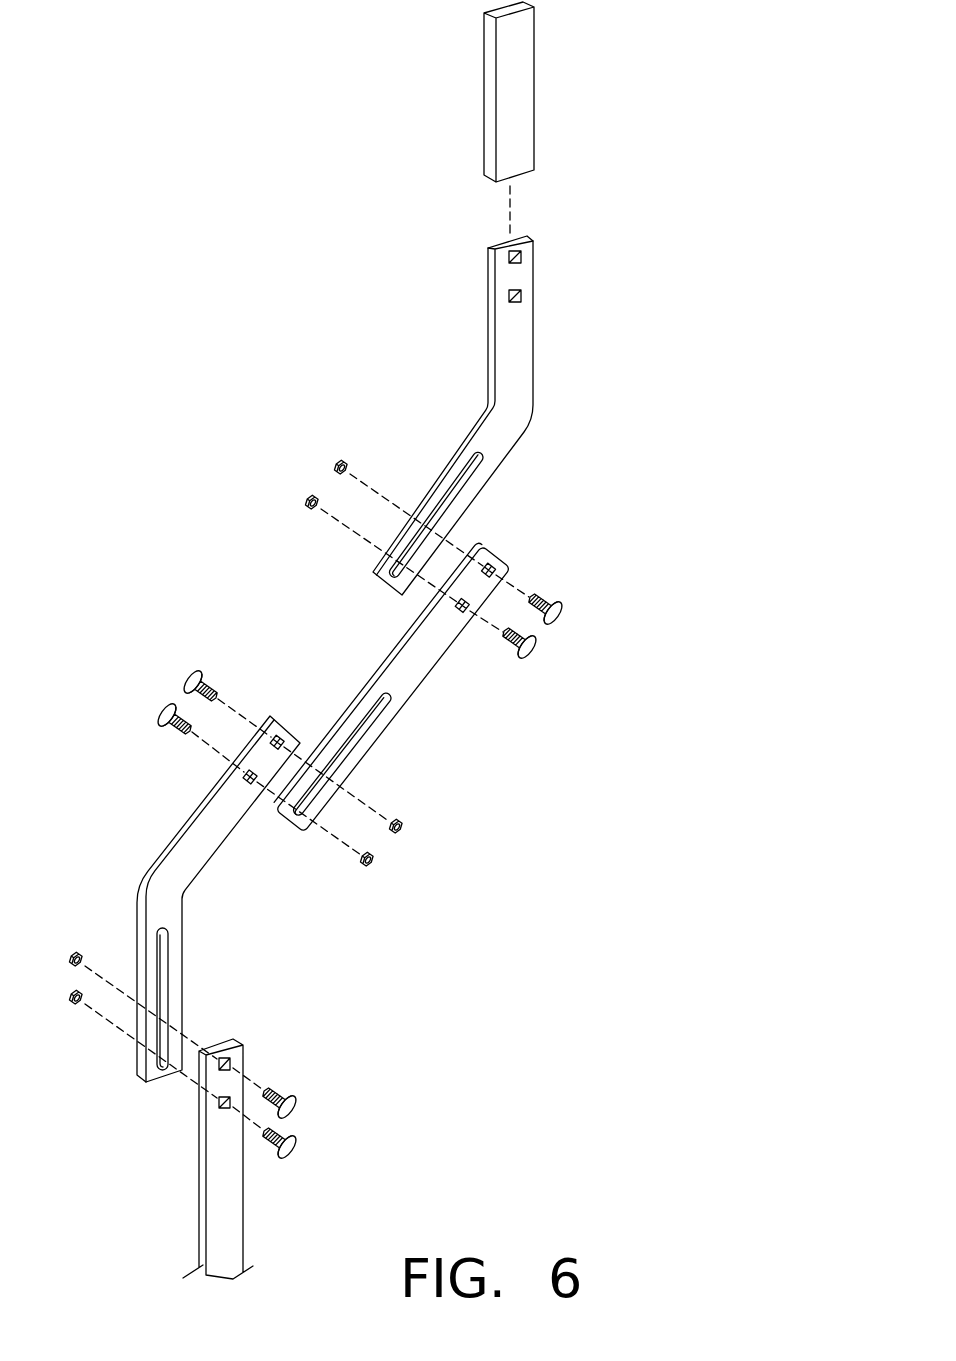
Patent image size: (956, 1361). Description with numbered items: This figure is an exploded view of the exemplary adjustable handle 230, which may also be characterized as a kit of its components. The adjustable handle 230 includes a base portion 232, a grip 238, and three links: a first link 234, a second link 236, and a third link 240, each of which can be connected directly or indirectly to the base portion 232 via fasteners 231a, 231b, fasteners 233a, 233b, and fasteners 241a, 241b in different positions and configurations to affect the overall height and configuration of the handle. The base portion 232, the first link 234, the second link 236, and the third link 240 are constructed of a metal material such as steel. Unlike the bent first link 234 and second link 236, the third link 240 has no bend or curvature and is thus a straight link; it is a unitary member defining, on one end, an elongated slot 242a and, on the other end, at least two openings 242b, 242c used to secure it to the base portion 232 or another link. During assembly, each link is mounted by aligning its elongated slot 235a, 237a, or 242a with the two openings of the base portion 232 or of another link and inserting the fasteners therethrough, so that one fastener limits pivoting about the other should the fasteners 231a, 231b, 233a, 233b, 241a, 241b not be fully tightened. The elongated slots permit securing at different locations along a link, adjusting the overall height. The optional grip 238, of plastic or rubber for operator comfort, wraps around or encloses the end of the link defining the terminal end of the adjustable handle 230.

The adjustable handle 230 is at (165, 344).
The fastener 231a is at (293, 1110).
The fastener 231b is at (293, 1150).
The base portion 232 is at (243, 1237).
The fastener 233a is at (185, 674).
The fastener 233b is at (160, 708).
The first link 234 is at (143, 883).
The elongated slot 235a is at (163, 977).
The second link 236 is at (535, 360).
The elongated slot 237a is at (478, 474).
The grip 238 is at (536, 89).
The third link 240 is at (417, 693).
The fastener 241a is at (563, 616).
The fastener 241b is at (538, 656).
The elongated slot 242a is at (368, 730).
The opening 242b is at (500, 560).
The opening 242c is at (460, 607).